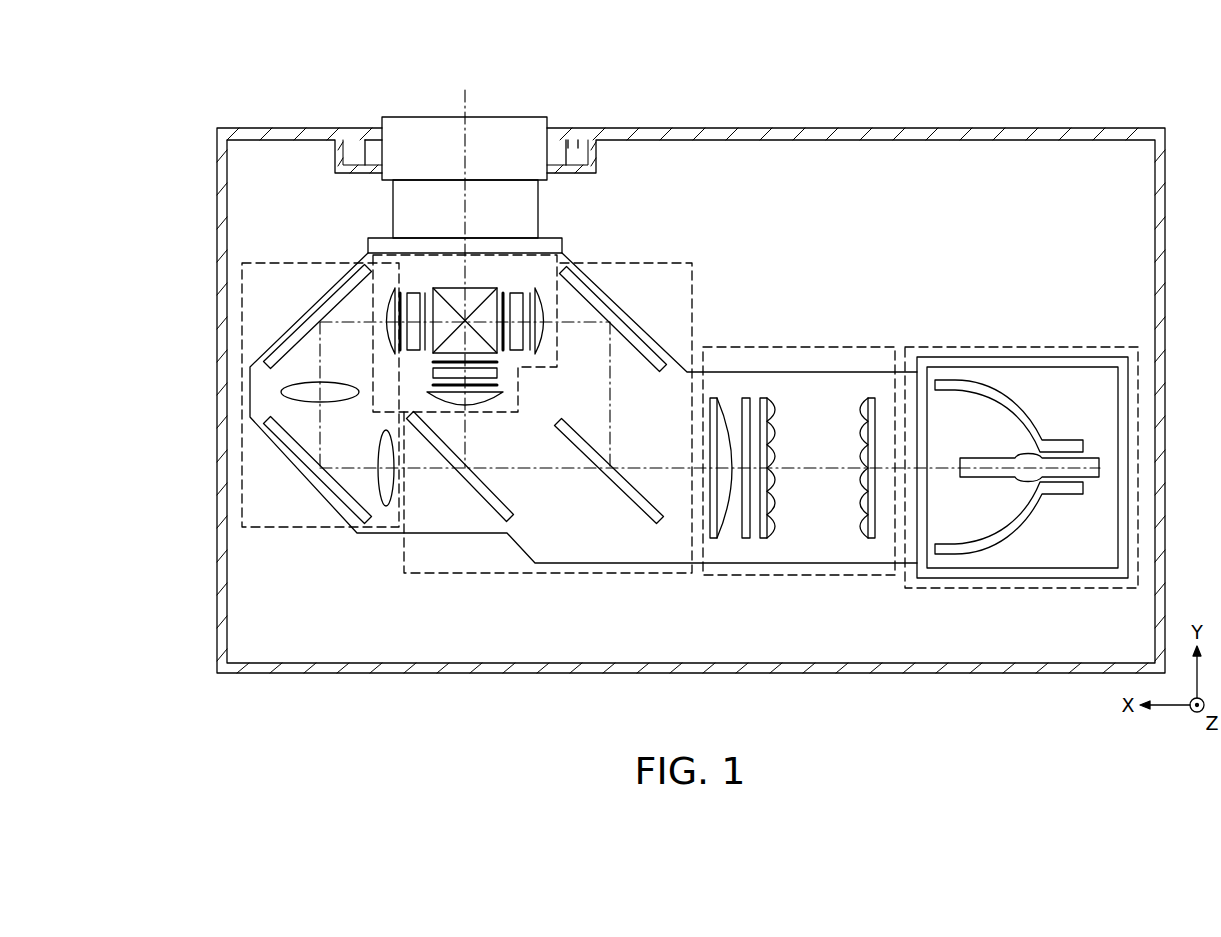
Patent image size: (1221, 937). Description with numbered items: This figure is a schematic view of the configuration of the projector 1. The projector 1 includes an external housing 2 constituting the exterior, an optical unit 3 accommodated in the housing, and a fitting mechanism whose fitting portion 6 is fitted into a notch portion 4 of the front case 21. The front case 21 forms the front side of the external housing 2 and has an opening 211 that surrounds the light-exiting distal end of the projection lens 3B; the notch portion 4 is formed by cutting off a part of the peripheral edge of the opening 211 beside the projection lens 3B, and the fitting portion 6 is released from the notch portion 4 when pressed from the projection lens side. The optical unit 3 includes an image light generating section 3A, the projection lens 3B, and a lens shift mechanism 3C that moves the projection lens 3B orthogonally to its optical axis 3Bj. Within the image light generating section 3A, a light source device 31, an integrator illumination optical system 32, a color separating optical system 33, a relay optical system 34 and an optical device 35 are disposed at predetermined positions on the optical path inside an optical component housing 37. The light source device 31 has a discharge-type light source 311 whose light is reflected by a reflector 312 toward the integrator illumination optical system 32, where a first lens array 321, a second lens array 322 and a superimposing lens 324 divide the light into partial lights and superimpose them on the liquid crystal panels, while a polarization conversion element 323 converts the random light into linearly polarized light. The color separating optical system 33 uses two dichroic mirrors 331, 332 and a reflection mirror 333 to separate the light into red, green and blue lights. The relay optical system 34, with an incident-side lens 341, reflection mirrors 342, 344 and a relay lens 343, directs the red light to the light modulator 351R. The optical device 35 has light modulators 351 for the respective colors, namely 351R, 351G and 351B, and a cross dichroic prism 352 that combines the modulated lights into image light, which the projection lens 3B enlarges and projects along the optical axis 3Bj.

The projector 1 is at (815, 62).
The external housing 2 is at (217, 232).
The front case 21 is at (691, 377).
The opening 211 is at (583, 147).
The notch portion 4 is at (362, 148).
The fitting portion 6 is at (376, 140).
The optical unit 3 is at (650, 358).
The image light generating section 3A is at (798, 270).
The projection lens 3B is at (410, 124).
The optical axis 3Bj is at (470, 97).
The lens shift mechanism 3C is at (495, 244).
The light source device 31 is at (930, 592).
The light source 311 is at (997, 472).
The reflector 312 is at (1030, 512).
The integrator illumination optical system 32 is at (745, 577).
The first lens array 321 is at (872, 398).
The second lens array 322 is at (768, 398).
The polarization conversion element 323 is at (752, 398).
The superimposing lens 324 is at (716, 398).
The color separating optical system 33 is at (584, 576).
The dichroic mirror 331 is at (637, 500).
The dichroic mirror 332 is at (490, 498).
The reflection mirror 333 is at (631, 335).
The relay optical system 34 is at (242, 380).
The incident-side lens 341 is at (386, 495).
The reflection mirror 342 is at (290, 446).
The relay lens 343 is at (333, 393).
The reflection mirror 344 is at (318, 325).
The optical device 35 is at (457, 270).
The light modulator 351 is at (464, 297).
The light modulator for R light 351R is at (410, 282).
The light modulator for G light 351G is at (505, 365).
The light modulator for B light 351B is at (520, 282).
The cross dichroic prism 352 is at (453, 292).
The optical component housing 37 is at (472, 540).